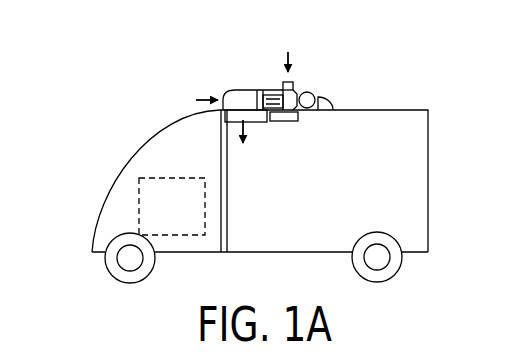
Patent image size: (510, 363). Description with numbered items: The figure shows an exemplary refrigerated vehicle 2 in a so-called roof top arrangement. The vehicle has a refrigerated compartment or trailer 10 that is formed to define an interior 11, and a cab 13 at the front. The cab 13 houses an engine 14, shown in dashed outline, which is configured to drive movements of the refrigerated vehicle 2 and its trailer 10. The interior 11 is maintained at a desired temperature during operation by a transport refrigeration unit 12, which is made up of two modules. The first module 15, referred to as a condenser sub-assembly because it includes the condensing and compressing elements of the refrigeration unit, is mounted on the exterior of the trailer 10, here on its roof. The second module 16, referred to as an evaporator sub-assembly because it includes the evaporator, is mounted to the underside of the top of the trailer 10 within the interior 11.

The refrigerated vehicle 2 is at (128, 161).
The refrigerated compartment or trailer 10 is at (428, 145).
The interior 11 is at (371, 124).
The transport refrigeration unit 12 is at (313, 92).
The cab 13 is at (107, 228).
The engine 14 is at (139, 200).
The first module 15 is at (270, 97).
The second module 16 is at (264, 127).